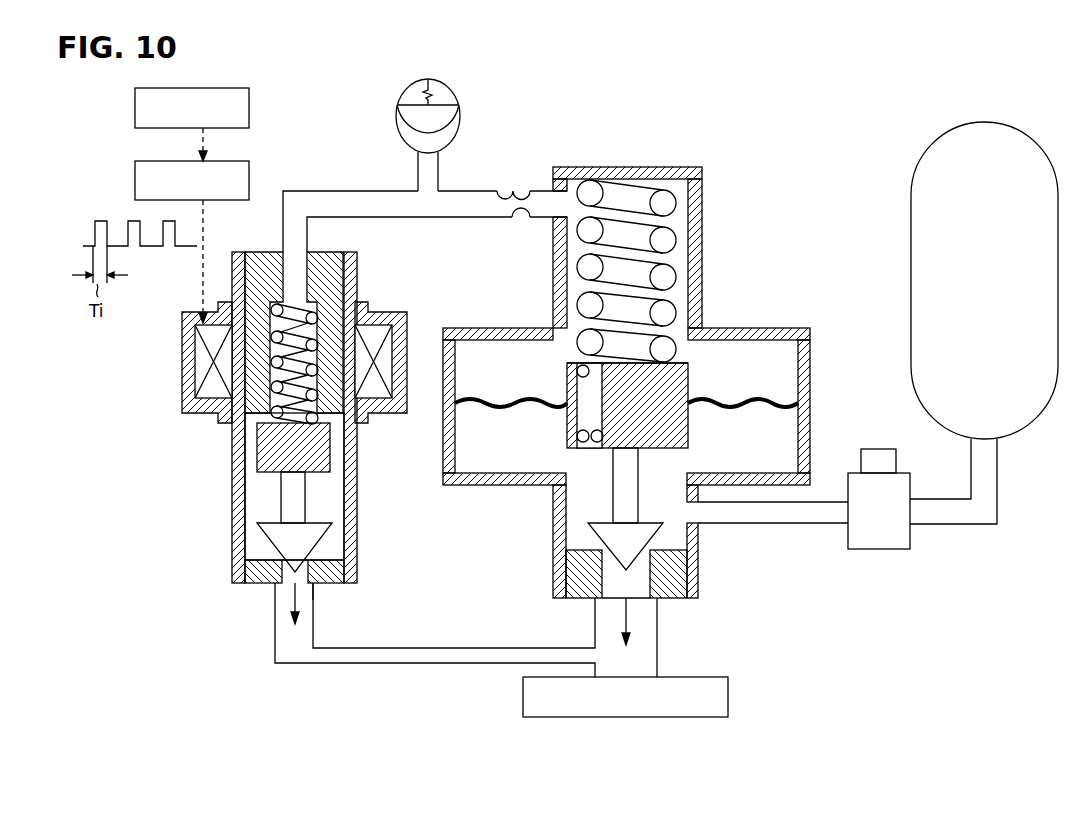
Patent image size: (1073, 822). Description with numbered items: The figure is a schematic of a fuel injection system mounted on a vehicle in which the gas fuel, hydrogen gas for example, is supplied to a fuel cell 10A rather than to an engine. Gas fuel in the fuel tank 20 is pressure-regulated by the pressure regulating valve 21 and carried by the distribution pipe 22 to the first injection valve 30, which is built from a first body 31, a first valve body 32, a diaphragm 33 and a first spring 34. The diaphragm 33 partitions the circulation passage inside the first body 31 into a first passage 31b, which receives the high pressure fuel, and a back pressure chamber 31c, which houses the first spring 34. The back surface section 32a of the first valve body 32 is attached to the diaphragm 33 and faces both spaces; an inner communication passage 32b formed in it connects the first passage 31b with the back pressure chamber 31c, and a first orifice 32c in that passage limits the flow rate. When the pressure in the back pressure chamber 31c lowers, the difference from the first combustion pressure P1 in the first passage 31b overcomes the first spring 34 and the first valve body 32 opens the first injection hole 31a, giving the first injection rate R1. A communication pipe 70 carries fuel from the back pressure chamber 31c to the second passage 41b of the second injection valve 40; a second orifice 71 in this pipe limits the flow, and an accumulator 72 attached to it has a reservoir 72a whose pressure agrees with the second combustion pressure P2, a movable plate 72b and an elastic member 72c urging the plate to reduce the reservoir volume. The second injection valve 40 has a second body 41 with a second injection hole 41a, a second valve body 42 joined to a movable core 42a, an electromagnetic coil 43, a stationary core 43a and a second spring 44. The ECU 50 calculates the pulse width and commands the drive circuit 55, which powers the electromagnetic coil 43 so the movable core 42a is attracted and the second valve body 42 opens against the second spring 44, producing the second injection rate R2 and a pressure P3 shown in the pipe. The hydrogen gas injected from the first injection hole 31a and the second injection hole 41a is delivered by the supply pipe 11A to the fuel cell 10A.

The fuel cell 10A is at (738, 693).
The supply pipe 11A is at (432, 665).
The fuel tank 20 is at (911, 204).
The pressure regulating valve 21 is at (873, 550).
The distribution pipe 22 is at (816, 528).
The first injection valve 30 is at (640, 422).
The first body 31 is at (698, 565).
The first injection hole 31a is at (660, 600).
The first passage 31b is at (790, 430).
The back pressure chamber 31c is at (790, 368).
The first valve body 32 is at (602, 533).
The back surface section 32a is at (715, 368).
The inner communication passage 32b is at (582, 358).
The first orifice 32c is at (580, 455).
The diaphragm 33 is at (753, 368).
The first spring 34 is at (668, 241).
The second injection valve 40 is at (275, 442).
The second body 41 is at (357, 540).
The second injection hole 41a is at (318, 596).
The second passage 41b is at (255, 503).
The second valve body 42 is at (280, 535).
The movable core 42a is at (272, 462).
The electromagnetic coil 43 is at (200, 357).
The stationary core 43a is at (253, 383).
The second spring 44 is at (262, 442).
The ECU 50 is at (228, 88).
The drive circuit 55 is at (228, 161).
The communication pipe 70 is at (330, 191).
The second orifice 71 is at (500, 189).
The accumulator 72 is at (433, 119).
The reservoir 72a is at (412, 133).
The movable plate 72b is at (410, 101).
The elastic member 72c is at (433, 88).
The first combustion pressure P1 is at (468, 440).
The second combustion pressure P2 is at (465, 352).
The pressure P3 is at (381, 205).
The first injection rate R1 is at (622, 625).
The second injection rate R2 is at (275, 603).